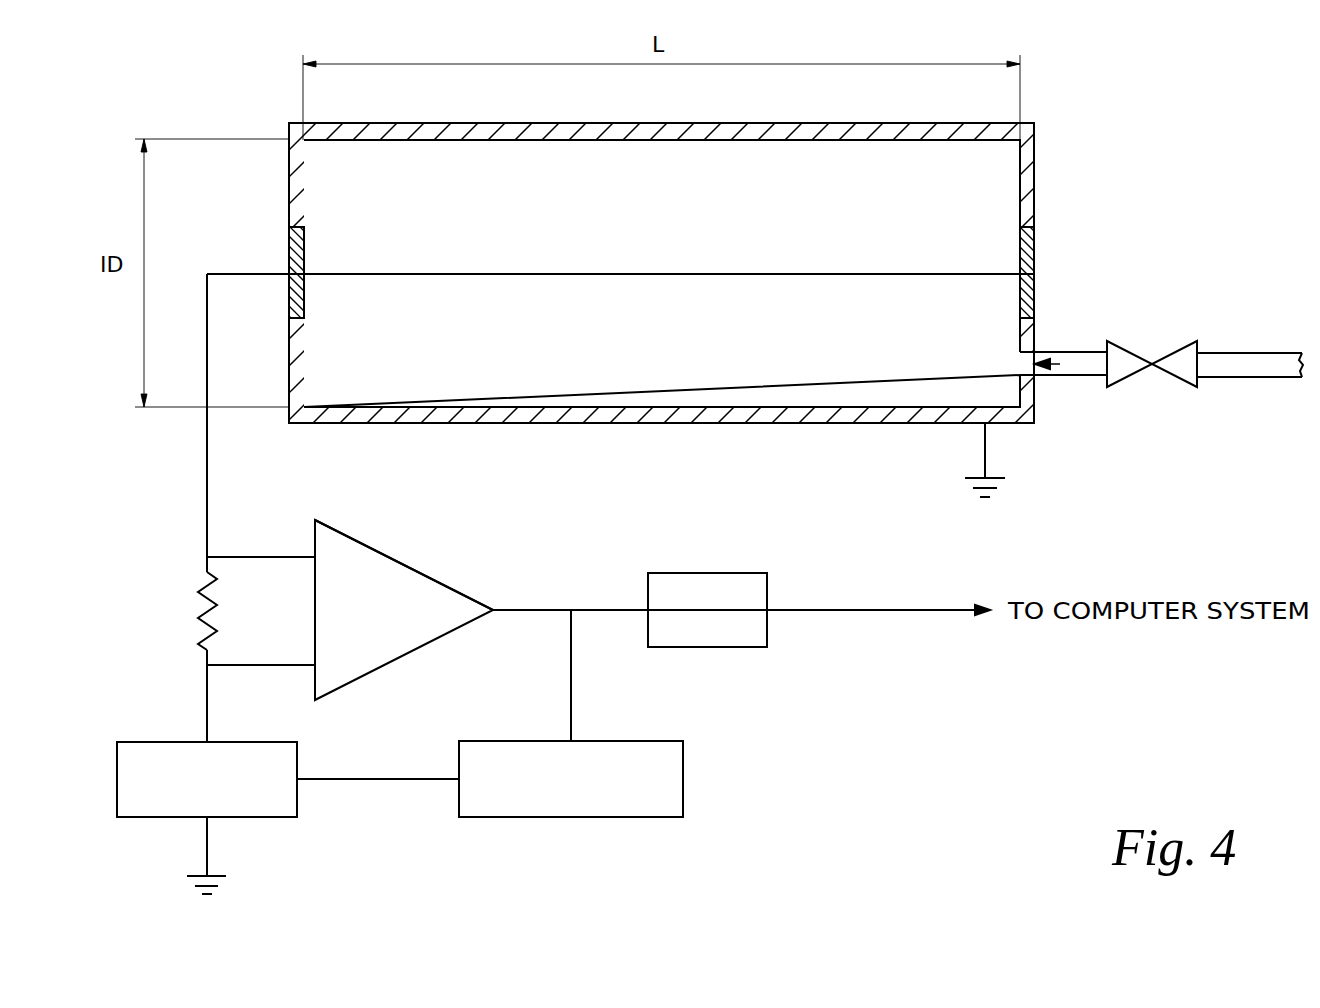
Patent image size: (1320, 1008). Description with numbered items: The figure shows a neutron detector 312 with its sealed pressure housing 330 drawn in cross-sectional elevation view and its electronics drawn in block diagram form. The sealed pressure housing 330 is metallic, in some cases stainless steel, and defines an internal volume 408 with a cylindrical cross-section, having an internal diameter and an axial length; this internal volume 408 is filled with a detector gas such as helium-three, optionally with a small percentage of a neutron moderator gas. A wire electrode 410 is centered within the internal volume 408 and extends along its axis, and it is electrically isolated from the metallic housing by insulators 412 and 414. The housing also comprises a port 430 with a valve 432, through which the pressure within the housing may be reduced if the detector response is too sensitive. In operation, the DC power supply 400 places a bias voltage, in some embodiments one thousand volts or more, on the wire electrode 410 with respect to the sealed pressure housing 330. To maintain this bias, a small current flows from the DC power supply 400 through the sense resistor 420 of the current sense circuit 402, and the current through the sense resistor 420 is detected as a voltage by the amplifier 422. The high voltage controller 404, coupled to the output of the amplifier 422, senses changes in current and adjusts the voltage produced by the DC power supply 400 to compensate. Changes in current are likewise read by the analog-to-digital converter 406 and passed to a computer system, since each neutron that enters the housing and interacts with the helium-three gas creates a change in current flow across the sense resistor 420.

The neutron detector 312 is at (198, 70).
The sealed pressure housing 330 is at (1037, 166).
The insulator 412 is at (288, 253).
The insulator 414 is at (1037, 246).
The wire electrode 410 is at (666, 273).
The internal volume 408 is at (685, 354).
The port 430 is at (1052, 363).
The valve 432 is at (1125, 345).
The sense resistor 420 is at (200, 607).
The current sense circuit 402 is at (365, 522).
The amplifier 422 is at (400, 558).
The analog-to-digital converter 406 is at (707, 573).
The DC power supply 400 is at (115, 770).
The high voltage controller 404 is at (686, 768).